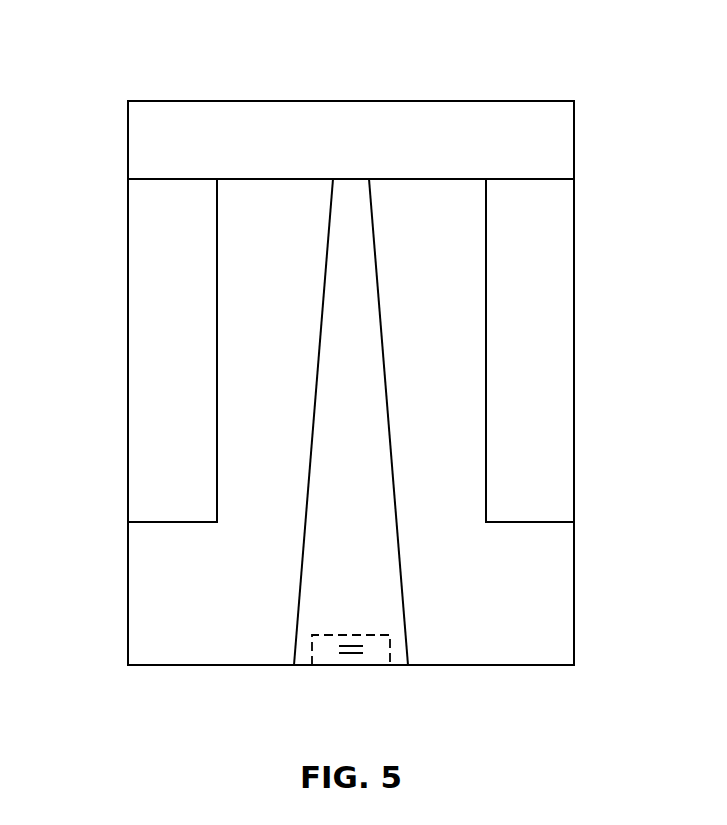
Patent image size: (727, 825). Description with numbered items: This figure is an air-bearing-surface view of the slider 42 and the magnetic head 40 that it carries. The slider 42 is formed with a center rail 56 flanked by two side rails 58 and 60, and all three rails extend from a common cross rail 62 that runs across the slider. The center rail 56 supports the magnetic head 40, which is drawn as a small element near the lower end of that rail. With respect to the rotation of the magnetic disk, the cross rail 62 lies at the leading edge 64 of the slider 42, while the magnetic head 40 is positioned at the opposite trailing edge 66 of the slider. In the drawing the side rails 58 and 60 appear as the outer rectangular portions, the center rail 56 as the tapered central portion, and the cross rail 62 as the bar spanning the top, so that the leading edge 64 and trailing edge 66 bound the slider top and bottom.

The magnetic head 40 is at (330, 658).
The slider 42 is at (128, 612).
The center rail 56 is at (335, 293).
The side rail 58 is at (145, 261).
The side rail 60 is at (557, 261).
The cross rail 62 is at (270, 115).
The leading edge 64 is at (452, 101).
The trailing edge 66 is at (472, 665).